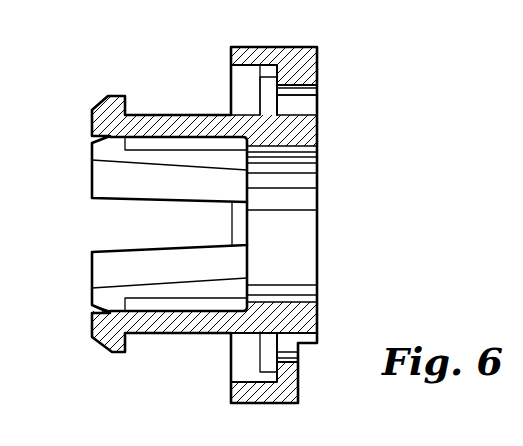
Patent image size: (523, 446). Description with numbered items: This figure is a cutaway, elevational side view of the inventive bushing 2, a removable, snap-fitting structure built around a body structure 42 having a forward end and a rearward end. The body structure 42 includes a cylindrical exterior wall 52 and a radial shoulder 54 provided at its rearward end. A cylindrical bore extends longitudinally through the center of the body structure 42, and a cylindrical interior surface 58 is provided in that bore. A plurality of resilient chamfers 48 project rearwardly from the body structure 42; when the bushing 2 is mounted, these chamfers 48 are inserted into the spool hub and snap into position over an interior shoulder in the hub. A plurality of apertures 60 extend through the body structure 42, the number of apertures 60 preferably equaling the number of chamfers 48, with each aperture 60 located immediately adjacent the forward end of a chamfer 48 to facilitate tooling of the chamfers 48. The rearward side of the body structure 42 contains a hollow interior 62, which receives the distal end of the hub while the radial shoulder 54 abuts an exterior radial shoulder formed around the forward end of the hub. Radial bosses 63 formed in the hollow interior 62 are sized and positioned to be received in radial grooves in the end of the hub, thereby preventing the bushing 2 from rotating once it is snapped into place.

The bushing 2 is at (332, 279).
The body structure 42 is at (300, 50).
The resilient chamfers 48 is at (102, 113).
The cylindrical exterior wall 52 is at (250, 46).
The radial shoulder 54 is at (232, 393).
The cylindrical interior surface 58 is at (290, 240).
The apertures 60 is at (302, 107).
The hollow interior 62 is at (243, 83).
The radial bosses 63 is at (267, 98).